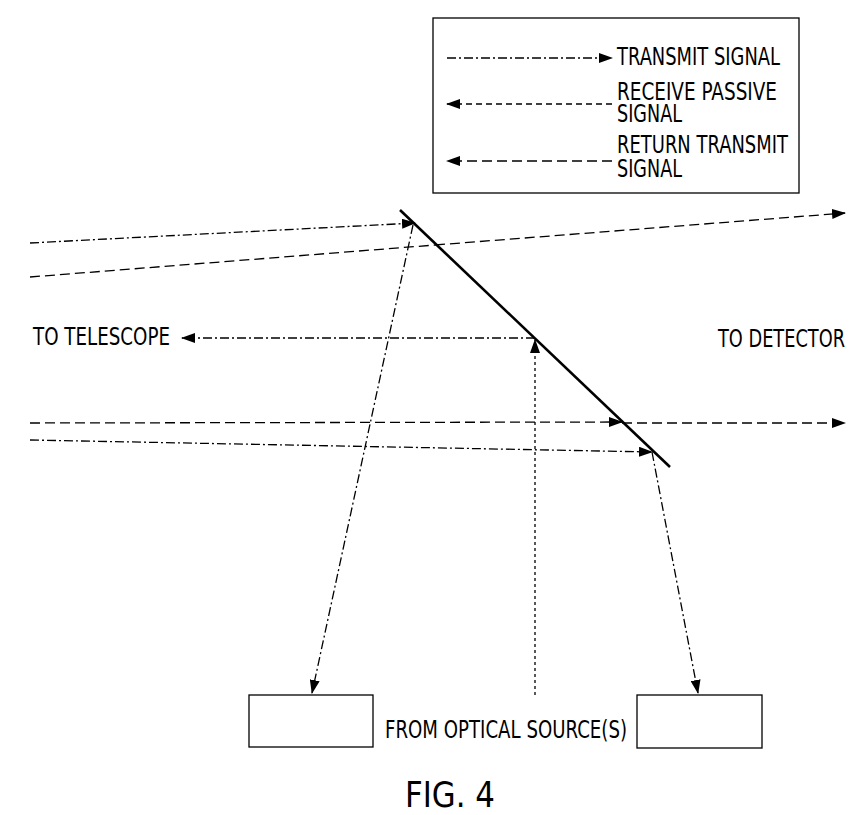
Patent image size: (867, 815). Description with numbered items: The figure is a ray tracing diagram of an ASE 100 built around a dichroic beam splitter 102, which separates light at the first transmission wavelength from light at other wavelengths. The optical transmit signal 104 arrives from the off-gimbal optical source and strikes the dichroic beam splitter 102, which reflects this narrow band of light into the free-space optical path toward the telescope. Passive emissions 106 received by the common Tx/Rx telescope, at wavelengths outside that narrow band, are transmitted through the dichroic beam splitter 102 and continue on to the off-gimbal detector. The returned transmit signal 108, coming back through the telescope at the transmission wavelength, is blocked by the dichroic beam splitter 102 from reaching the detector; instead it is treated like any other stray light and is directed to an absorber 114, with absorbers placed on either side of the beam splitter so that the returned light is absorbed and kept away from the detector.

The ASE 100 is at (110, 200).
The dichroic beam splitter 102 is at (480, 286).
The optical transmit signal 104 is at (528, 57).
The passive emissions 106 is at (528, 160).
The returned transmit signal 108 is at (528, 103).
The absorber 114 is at (249, 722).